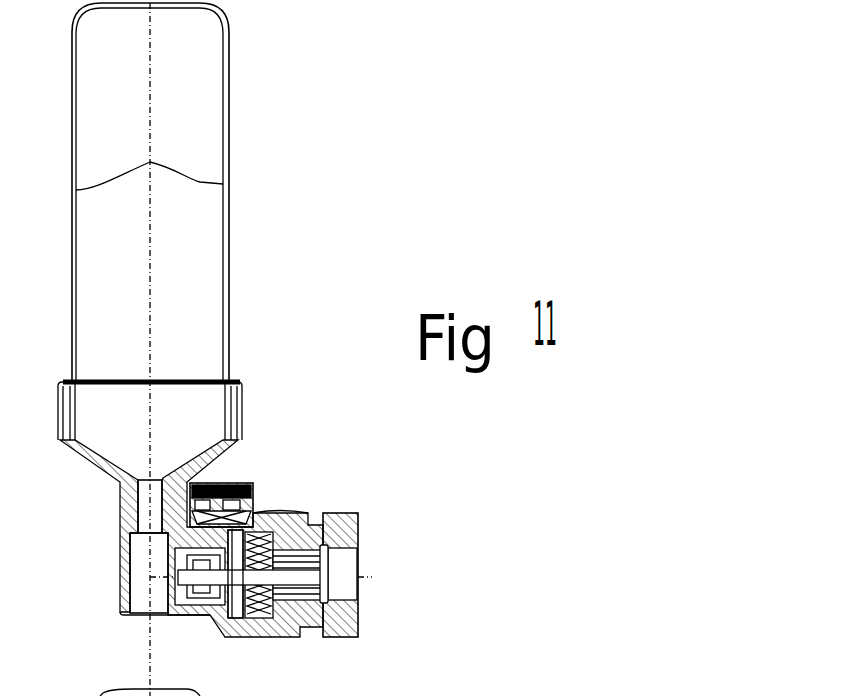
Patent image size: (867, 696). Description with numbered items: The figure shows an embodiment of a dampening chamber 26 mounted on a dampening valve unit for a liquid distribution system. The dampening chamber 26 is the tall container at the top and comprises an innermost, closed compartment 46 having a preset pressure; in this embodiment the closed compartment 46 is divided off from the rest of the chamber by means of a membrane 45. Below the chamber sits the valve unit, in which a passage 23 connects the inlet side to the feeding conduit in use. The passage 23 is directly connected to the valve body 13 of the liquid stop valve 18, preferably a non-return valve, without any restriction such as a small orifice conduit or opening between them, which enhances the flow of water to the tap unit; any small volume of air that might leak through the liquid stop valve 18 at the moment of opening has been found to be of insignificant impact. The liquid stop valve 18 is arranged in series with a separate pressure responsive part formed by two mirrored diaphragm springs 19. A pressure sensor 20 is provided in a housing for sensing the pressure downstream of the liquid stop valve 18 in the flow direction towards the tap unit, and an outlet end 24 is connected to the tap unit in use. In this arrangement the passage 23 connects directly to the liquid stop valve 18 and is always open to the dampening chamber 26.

The valve body 13 is at (173, 580).
The liquid stop valve 18 is at (252, 505).
The diaphragm springs 19 is at (230, 620).
The pressure sensor 20 is at (230, 482).
The passage 23 is at (143, 590).
The outlet end 24 is at (352, 530).
The dampening chamber 26 is at (205, 310).
The membrane 45 is at (200, 181).
The closed compartment 46 is at (200, 130).